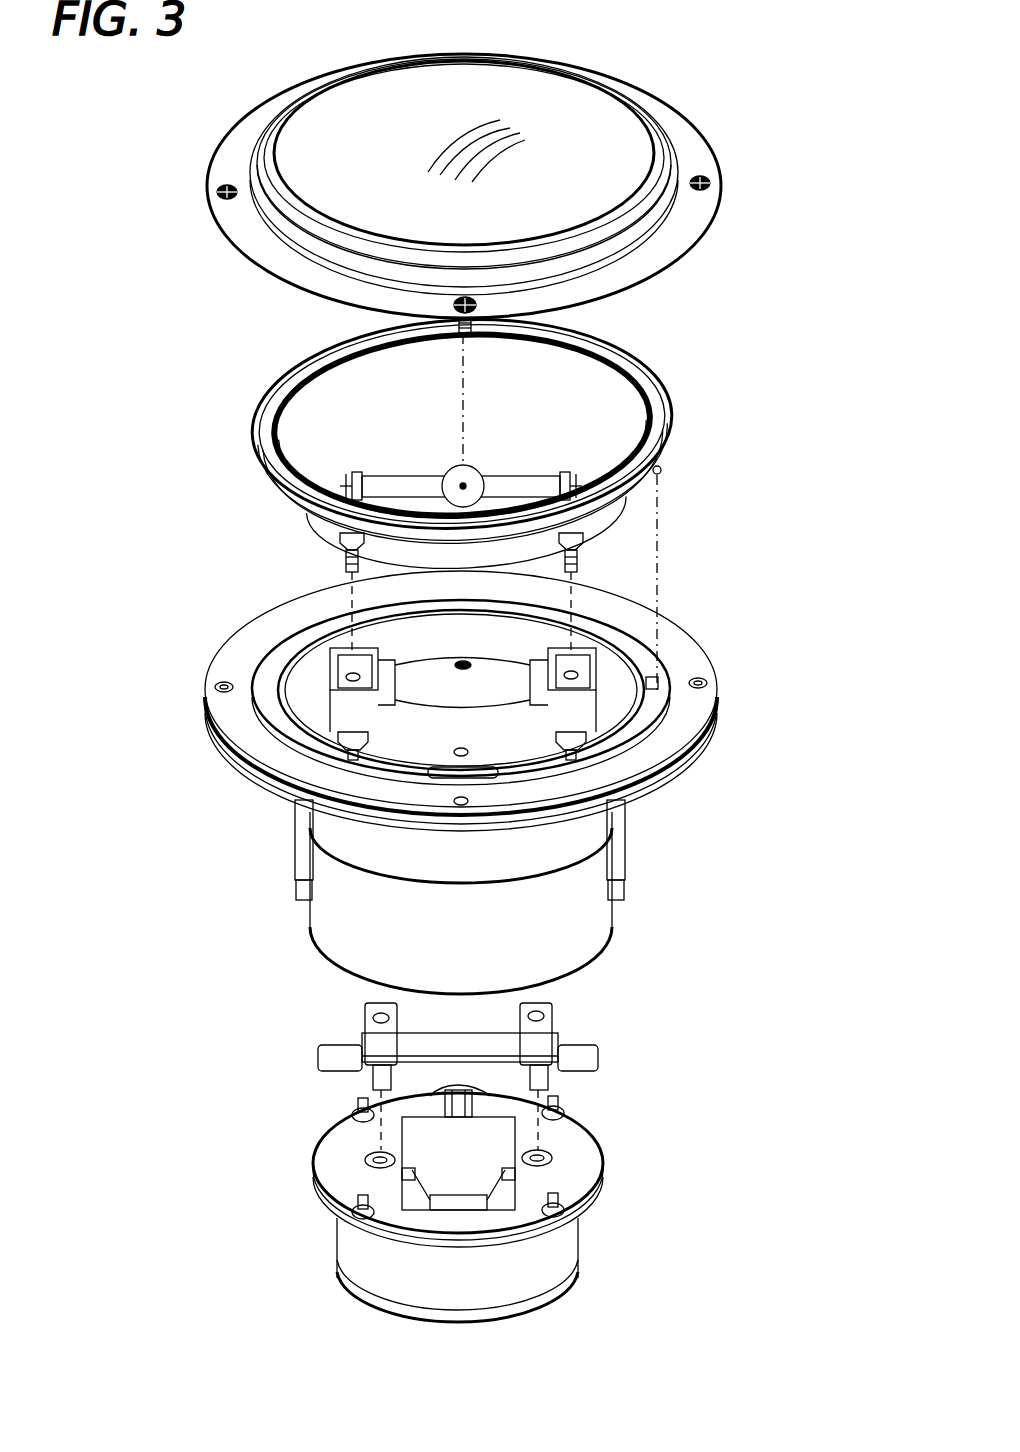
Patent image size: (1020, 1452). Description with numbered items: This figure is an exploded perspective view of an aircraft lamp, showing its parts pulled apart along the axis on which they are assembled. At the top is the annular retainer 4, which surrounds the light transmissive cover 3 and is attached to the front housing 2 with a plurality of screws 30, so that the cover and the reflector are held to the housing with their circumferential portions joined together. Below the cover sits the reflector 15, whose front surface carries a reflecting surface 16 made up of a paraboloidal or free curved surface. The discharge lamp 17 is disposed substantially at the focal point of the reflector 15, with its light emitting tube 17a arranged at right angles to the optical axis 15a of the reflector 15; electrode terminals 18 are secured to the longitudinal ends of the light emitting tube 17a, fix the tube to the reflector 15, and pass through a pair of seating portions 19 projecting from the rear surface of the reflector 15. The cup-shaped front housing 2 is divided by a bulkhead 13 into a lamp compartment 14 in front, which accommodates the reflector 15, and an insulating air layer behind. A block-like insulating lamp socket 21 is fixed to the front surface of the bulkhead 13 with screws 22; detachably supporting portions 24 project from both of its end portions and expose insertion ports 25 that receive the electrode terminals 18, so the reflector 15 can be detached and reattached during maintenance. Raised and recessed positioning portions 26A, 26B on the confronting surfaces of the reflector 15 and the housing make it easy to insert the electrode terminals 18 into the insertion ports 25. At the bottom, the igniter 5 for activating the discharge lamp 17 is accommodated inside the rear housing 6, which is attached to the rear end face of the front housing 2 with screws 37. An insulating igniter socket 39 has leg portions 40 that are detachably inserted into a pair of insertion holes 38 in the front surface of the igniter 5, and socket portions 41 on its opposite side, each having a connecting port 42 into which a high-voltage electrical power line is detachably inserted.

The front housing 2 is at (325, 935).
The light transmissive cover 3 is at (560, 95).
The retainer 4 is at (245, 150).
The igniter 5 is at (340, 1182).
The rear housing 6 is at (340, 1262).
The bulkhead 13 is at (415, 752).
The lamp compartment 14 is at (311, 702).
The reflector 15 is at (265, 432).
The optical axis 15a is at (460, 376).
The reflecting surface 16 is at (618, 385).
The discharge lamp 17 is at (448, 474).
The light emitting tube 17a is at (530, 472).
The electrode terminals 18 is at (346, 568).
The seating portions 19 is at (340, 538).
The lamp socket 21 is at (680, 768).
The screws 22 is at (295, 792).
The detachably supporting portions 24 is at (270, 665).
The insertion ports 25 is at (440, 652).
The raised positioning portion 26A is at (665, 473).
The recessed positioning portion 26B is at (668, 686).
The screws 30 is at (706, 180).
The screws 37 is at (352, 1108).
The insertion holes 38 is at (365, 1150).
The igniter socket 39 is at (320, 1050).
The leg portions 40 is at (550, 1082).
The socket portions 41 is at (552, 1014).
The connecting port 42 is at (365, 1012).